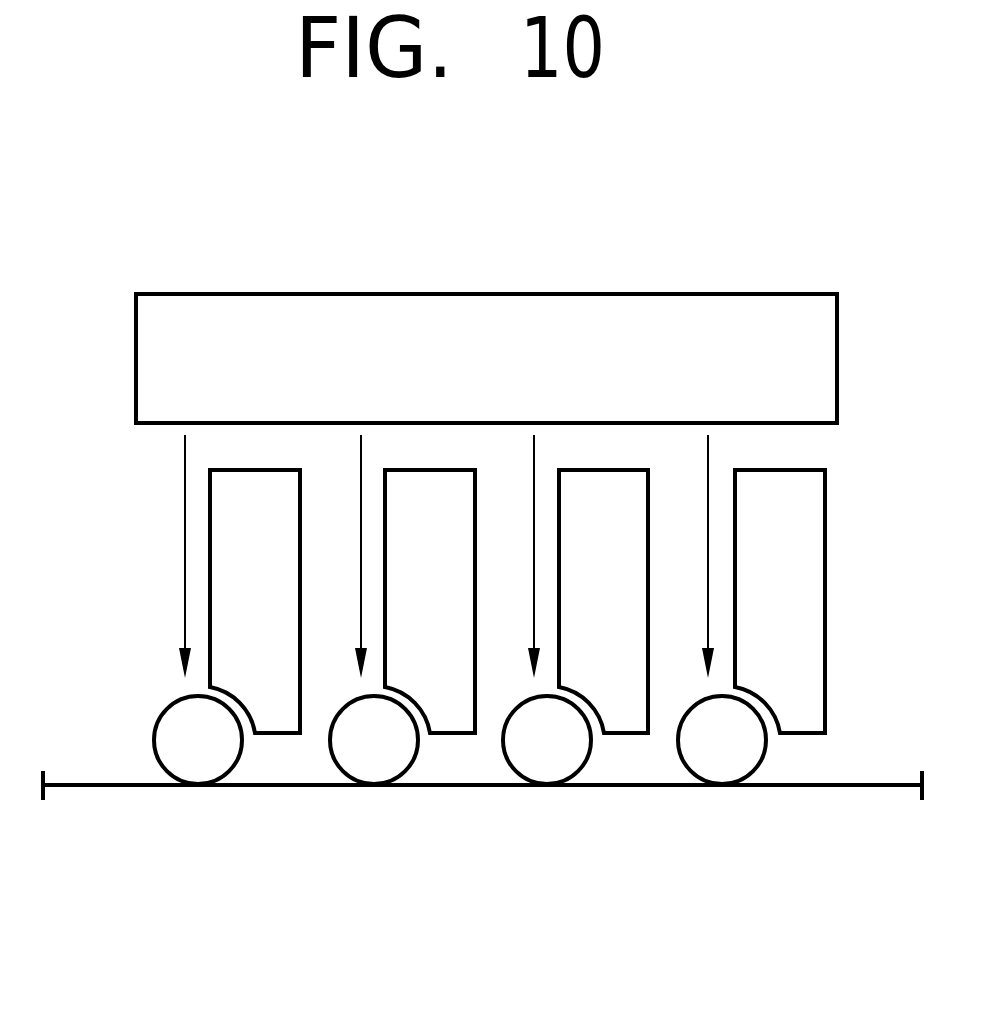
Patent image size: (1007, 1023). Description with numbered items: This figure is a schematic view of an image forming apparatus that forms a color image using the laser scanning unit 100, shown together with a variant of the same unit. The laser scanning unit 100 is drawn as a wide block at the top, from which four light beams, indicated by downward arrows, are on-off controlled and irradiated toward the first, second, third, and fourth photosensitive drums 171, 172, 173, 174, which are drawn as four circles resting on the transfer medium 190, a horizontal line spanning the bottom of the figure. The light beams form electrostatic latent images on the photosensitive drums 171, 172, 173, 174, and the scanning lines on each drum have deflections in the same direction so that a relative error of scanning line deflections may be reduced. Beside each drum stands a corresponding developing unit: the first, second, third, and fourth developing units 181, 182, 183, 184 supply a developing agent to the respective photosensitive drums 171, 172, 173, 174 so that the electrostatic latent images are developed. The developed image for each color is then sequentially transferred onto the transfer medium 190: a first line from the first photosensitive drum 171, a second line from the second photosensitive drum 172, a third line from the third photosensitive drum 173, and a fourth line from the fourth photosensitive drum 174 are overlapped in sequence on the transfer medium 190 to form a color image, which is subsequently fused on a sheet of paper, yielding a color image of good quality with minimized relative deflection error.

The laser scanning unit 100 is at (483, 295).
The first photosensitive drum 171 is at (373, 775).
The second photosensitive drum 172 is at (197, 775).
The third photosensitive drum 173 is at (546, 775).
The fourth photosensitive drum 174 is at (722, 775).
The first developing unit 181 is at (455, 725).
The second developing unit 182 is at (272, 725).
The third developing unit 183 is at (631, 725).
The fourth developing unit 184 is at (806, 725).
The transfer medium 190 is at (875, 787).